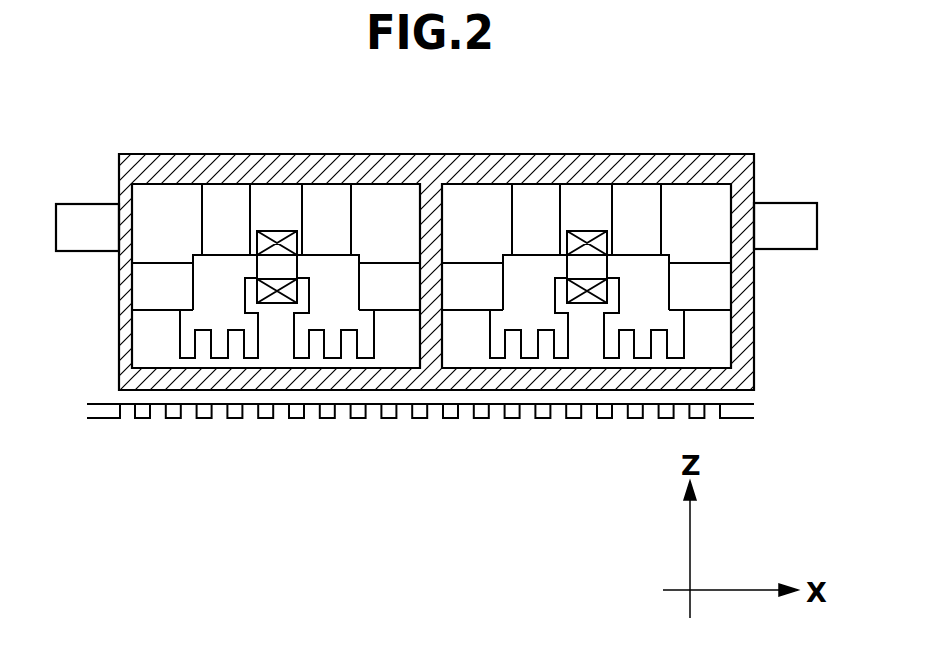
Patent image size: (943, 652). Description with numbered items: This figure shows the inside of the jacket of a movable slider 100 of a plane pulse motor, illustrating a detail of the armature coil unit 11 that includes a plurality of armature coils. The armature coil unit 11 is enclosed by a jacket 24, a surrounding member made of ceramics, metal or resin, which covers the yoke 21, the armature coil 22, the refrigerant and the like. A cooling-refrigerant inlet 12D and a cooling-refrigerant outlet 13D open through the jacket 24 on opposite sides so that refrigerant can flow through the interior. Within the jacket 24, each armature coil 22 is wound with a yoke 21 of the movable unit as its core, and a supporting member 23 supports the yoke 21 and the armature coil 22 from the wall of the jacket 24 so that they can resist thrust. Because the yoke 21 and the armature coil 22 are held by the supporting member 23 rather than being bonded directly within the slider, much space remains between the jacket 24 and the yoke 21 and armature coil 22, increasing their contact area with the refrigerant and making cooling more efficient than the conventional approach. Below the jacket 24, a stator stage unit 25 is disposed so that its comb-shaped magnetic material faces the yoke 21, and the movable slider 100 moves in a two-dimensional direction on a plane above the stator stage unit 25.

The movable slider 100 is at (424, 253).
The armature coil unit 11 is at (183, 230).
The cooling-refrigerant inlet 12D is at (82, 212).
The cooling-refrigerant outlet 13D is at (788, 222).
The yoke 21 is at (216, 320).
The armature coil 22 is at (273, 304).
The supporting member 23 is at (141, 293).
The jacket 24 is at (425, 153).
The stator stage unit 25 is at (555, 422).